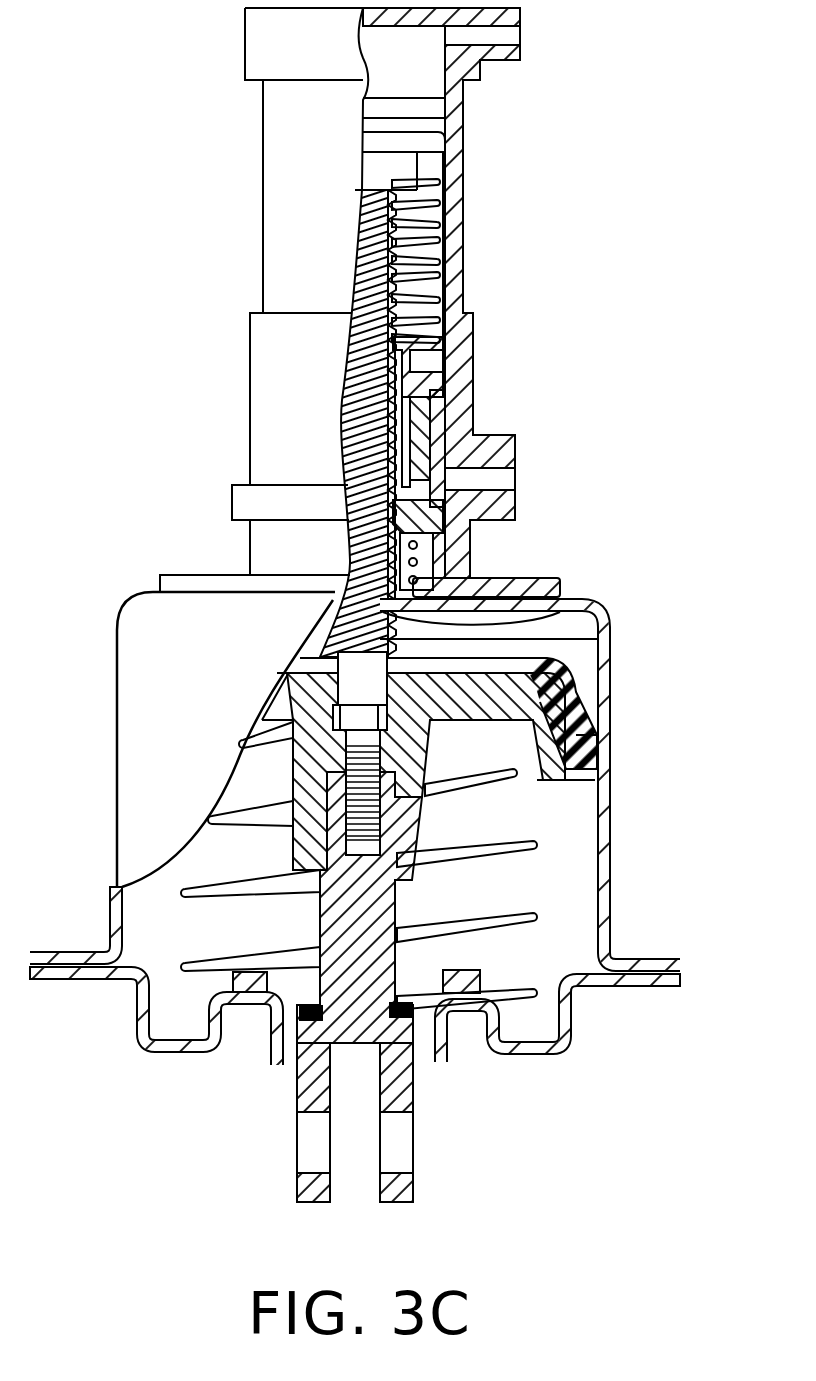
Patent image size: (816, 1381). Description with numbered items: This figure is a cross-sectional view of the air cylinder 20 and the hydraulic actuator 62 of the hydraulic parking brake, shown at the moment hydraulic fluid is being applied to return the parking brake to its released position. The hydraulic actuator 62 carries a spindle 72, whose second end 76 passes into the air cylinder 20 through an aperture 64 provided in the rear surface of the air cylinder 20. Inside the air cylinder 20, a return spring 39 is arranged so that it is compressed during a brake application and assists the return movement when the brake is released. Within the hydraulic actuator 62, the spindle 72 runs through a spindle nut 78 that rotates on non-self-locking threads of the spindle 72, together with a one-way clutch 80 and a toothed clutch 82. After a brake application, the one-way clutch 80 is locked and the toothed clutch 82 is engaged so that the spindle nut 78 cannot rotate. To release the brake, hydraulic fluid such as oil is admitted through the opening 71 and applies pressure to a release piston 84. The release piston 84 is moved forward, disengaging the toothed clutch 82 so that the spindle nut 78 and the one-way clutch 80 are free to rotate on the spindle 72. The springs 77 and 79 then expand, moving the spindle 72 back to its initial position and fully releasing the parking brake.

The air cylinder 20 is at (130, 612).
The return spring 39 is at (520, 846).
The hydraulic actuator 62 is at (272, 157).
The aperture 64 is at (520, 613).
The opening 71 is at (500, 477).
The spindle 72 is at (432, 286).
The second end 76 is at (357, 693).
The spring 77 is at (440, 205).
The spindle nut 78 is at (457, 362).
The spring 79 is at (430, 250).
The one-way clutch 80 is at (450, 420).
The toothed clutch 82 is at (420, 498).
The release piston 84 is at (490, 435).